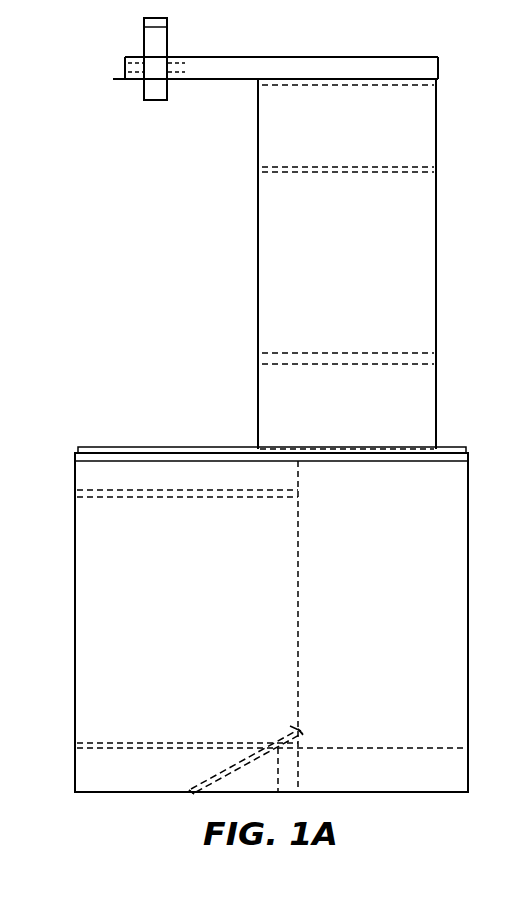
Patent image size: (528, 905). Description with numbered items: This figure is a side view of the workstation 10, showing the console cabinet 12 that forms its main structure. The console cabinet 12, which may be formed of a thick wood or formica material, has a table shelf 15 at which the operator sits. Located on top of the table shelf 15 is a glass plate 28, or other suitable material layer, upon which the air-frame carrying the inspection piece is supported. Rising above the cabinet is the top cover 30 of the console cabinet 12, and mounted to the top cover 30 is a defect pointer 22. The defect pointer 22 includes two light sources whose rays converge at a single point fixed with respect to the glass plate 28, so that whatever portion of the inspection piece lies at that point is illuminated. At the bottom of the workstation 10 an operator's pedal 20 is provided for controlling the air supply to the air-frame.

The workstation 10 is at (218, 148).
The console cabinet 12 is at (398, 249).
The table shelf 15 is at (75, 458).
The operator's pedal 20 is at (263, 740).
The defect pointer 22 is at (168, 36).
The glass plate 28 is at (165, 447).
The top cover 30 is at (124, 61).